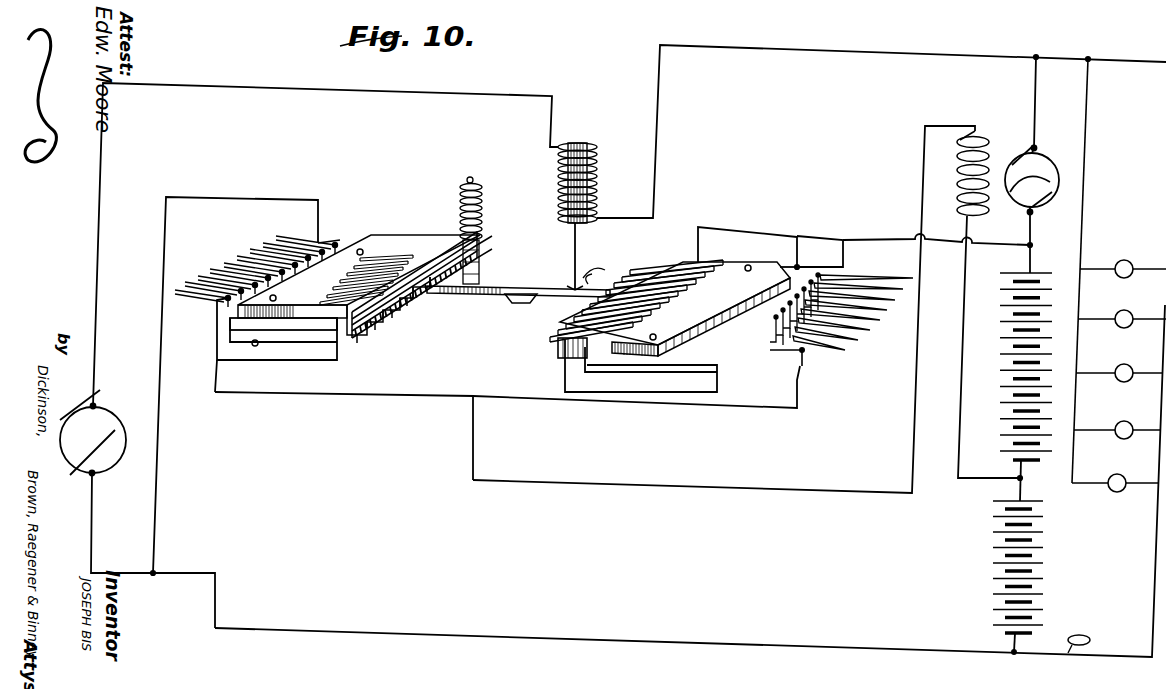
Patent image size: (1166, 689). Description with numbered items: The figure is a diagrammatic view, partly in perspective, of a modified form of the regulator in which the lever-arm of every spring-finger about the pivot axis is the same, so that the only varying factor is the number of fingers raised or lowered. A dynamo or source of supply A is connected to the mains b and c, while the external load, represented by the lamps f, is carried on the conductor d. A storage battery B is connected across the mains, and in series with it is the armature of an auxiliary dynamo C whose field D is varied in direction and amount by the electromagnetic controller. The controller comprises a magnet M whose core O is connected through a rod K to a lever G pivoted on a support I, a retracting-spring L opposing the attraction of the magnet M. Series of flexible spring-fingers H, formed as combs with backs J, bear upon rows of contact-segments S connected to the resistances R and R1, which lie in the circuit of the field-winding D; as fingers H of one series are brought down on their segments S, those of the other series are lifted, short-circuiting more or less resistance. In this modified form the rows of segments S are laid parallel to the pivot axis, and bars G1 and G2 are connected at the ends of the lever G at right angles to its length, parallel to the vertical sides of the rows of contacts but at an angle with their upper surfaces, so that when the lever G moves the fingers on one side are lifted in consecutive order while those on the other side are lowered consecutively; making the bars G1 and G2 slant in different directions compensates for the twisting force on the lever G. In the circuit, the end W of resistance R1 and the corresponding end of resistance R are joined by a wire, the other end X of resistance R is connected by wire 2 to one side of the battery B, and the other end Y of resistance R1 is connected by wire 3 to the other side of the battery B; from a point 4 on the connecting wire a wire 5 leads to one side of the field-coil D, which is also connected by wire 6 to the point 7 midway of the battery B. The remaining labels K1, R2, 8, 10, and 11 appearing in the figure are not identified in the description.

The dynamo A is at (90, 404).
The storage battery B is at (1002, 345).
The auxiliary dynamo C is at (1032, 153).
The field-winding D is at (975, 126).
The lever G is at (491, 296).
The bar G1 is at (443, 291).
The bar G2 is at (675, 295).
The spring-fingers H is at (795, 309).
The support I is at (505, 296).
The backs J is at (594, 276).
The rod K is at (378, 250).
The lever arm contact K1 is at (557, 266).
The retracting-spring L is at (486, 199).
The magnet M is at (556, 160).
The core O is at (598, 195).
The resistance R is at (256, 271).
The resistance R1 is at (870, 334).
The key contacts R2 is at (897, 274).
The segments S is at (574, 404).
The end of resistance R' W is at (803, 351).
The end of resistance R X is at (320, 242).
The end of resistance R' Y is at (819, 252).
The main b is at (90, 528).
The main c is at (244, 84).
The conductor d is at (1055, 57).
The lamps f is at (1123, 260).
The wire 2 is at (226, 198).
The wire 3 is at (864, 239).
The point 4 is at (473, 394).
The wire 5 is at (577, 480).
The wire 6 is at (962, 276).
The point 7 is at (325, 394).
The binding post 8 is at (250, 344).
The wire 10 is at (257, 317).
The wire 11 is at (340, 317).